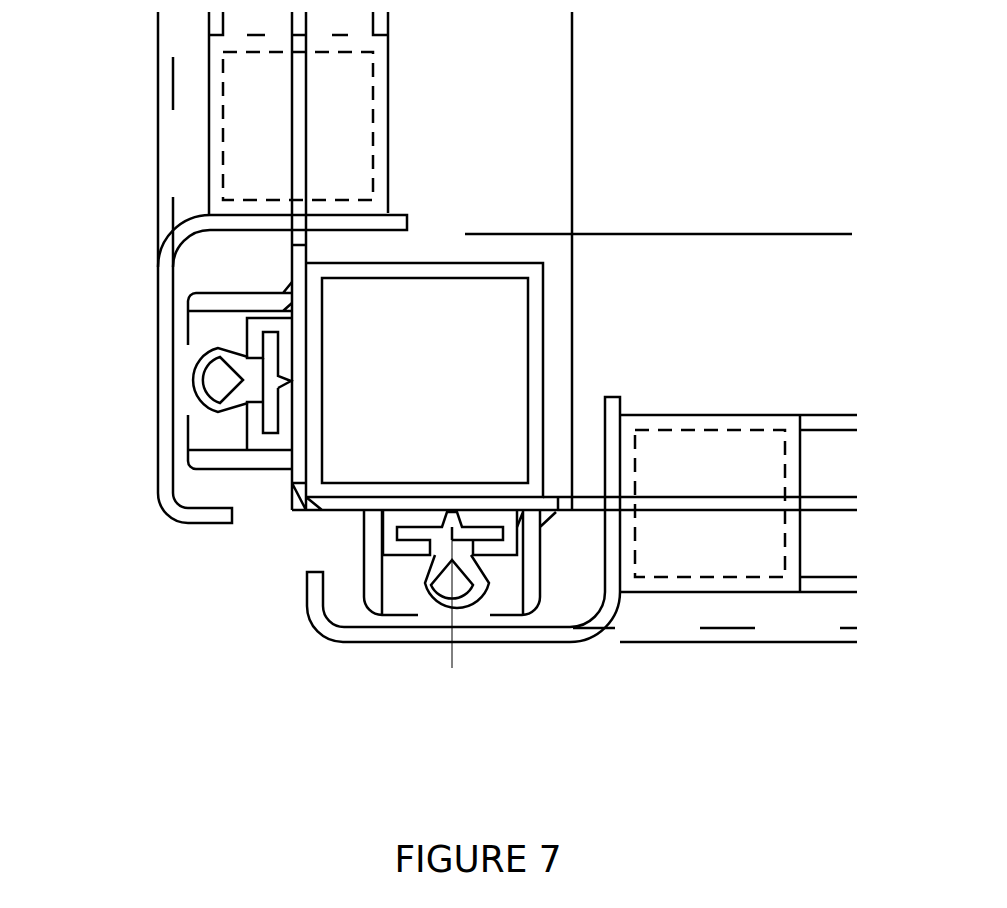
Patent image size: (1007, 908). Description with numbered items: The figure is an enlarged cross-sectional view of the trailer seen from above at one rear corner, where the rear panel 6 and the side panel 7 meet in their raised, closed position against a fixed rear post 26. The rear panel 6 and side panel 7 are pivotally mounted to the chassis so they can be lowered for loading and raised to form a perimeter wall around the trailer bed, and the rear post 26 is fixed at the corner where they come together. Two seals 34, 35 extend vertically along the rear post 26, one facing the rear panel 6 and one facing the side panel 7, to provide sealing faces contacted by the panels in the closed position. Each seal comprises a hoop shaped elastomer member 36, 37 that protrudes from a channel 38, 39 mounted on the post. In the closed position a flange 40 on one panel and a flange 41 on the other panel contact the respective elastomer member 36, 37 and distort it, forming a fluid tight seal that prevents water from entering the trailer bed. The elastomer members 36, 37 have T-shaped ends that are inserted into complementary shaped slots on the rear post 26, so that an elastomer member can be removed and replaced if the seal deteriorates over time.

The rear panel 6 is at (160, 77).
The side panel 7 is at (772, 602).
The rear post 26 is at (437, 280).
The seal 34 is at (447, 600).
The seal 35 is at (205, 387).
The hoop shaped elastomer member 36 is at (423, 610).
The hoop shaped elastomer member 37 is at (186, 360).
The channel 38 is at (503, 592).
The channel 39 is at (210, 434).
The flange 40 is at (567, 638).
The flange 41 is at (158, 260).